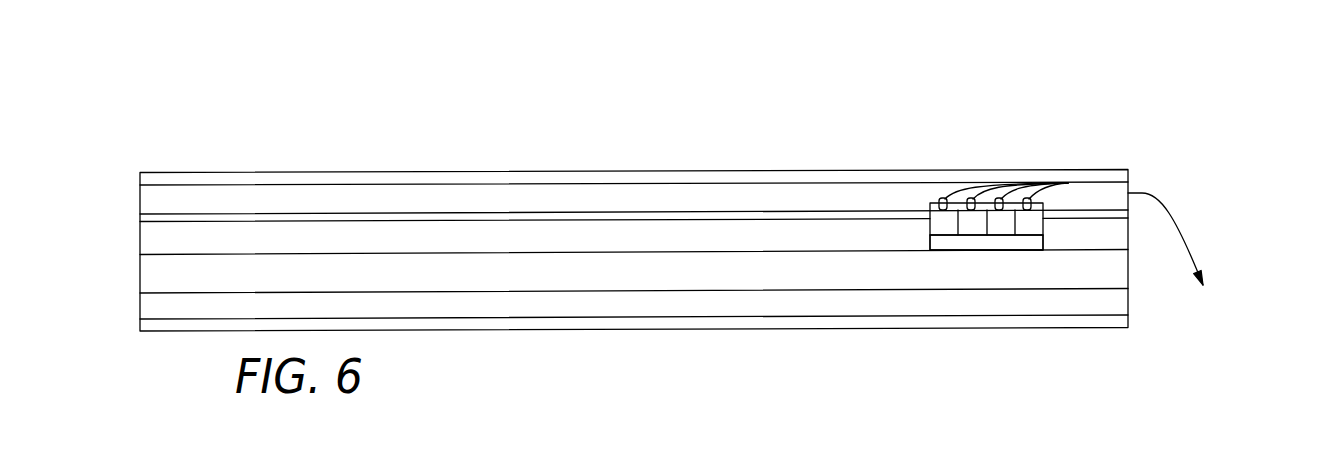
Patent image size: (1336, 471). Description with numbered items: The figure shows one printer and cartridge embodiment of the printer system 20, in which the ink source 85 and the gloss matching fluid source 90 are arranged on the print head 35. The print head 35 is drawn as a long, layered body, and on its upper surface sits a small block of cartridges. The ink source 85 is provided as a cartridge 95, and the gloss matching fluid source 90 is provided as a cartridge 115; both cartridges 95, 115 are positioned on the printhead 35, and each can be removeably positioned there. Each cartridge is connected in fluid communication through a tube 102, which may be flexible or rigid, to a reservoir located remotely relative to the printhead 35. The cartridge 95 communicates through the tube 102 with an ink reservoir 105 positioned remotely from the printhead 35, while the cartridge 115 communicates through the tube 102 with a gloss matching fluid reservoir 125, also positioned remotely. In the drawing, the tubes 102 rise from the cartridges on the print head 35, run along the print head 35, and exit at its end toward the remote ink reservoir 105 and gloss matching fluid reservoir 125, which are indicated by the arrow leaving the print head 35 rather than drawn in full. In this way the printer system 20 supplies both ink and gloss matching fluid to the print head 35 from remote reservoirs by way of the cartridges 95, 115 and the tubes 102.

The printer system 20 is at (537, 125).
The cartridge 115 is at (933, 223).
The print head 35 is at (1005, 245).
The tube 102 is at (1123, 208).
The cartridge 95 is at (1042, 183).
The ink source 85 is at (1060, 101).
The gloss matching fluid source 90 is at (1024, 141).
The ink reservoir 105 is at (1220, 258).
The gloss matching fluid reservoir 125 is at (1220, 258).